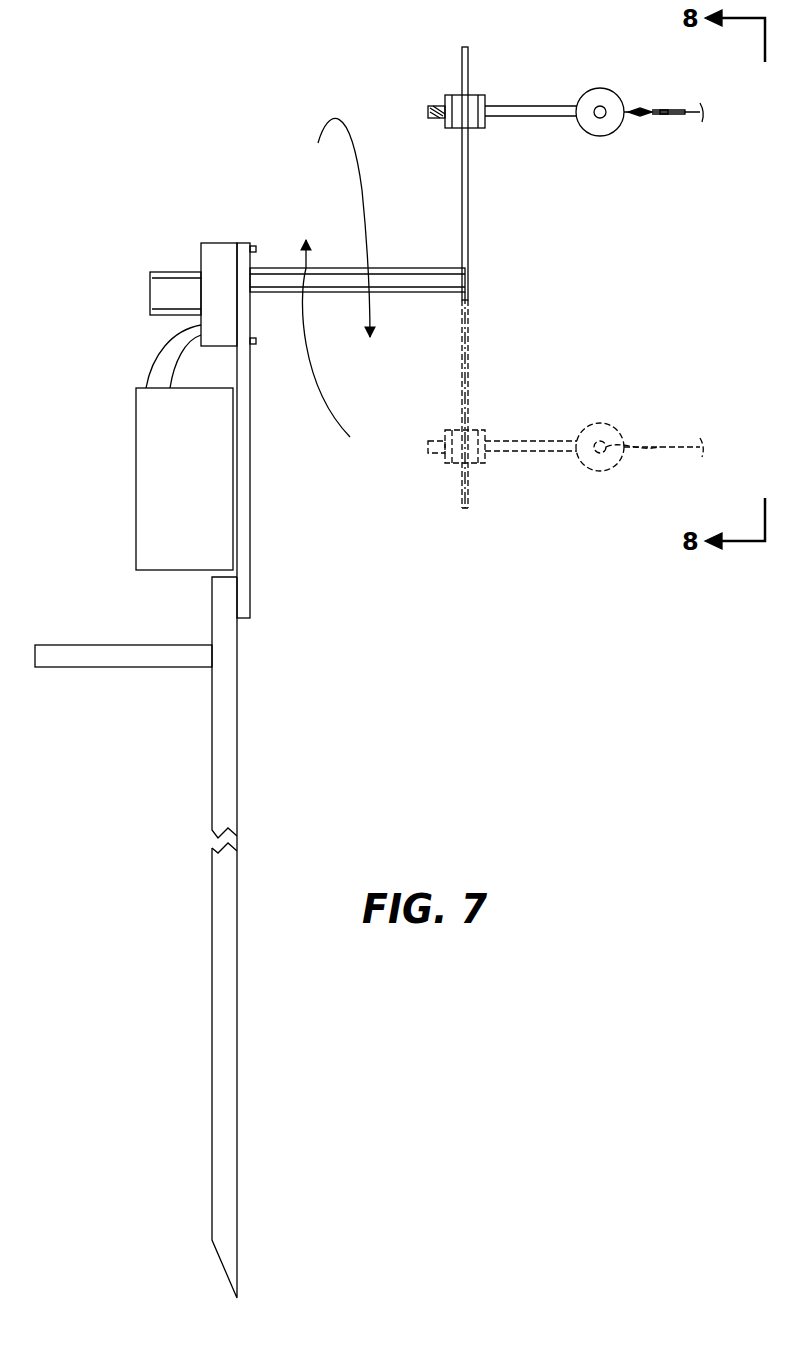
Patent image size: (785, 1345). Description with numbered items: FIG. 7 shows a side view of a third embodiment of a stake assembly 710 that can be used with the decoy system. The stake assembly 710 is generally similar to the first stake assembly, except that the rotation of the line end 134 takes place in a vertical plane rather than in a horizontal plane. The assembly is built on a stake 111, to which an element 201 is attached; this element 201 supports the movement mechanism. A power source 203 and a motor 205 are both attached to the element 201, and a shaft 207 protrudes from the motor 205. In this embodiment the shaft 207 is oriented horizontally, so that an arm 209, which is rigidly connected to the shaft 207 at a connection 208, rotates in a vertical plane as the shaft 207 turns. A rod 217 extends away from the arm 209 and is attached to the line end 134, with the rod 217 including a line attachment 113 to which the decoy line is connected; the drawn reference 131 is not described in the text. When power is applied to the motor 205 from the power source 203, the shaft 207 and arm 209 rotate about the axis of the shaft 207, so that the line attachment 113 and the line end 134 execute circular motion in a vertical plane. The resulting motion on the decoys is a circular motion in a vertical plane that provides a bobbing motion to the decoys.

The stake assembly 710 is at (110, 118).
The stake 111 is at (212, 757).
The element 201 is at (250, 497).
The power source 203 is at (150, 478).
The motor 205 is at (201, 262).
The shaft 207 is at (282, 268).
The arm 209 is at (462, 180).
The connection 208 is at (465, 298).
The rod 217 is at (514, 110).
The line attachment 113 is at (600, 88).
The cable 131 is at (700, 106).
The line end 134 is at (650, 117).